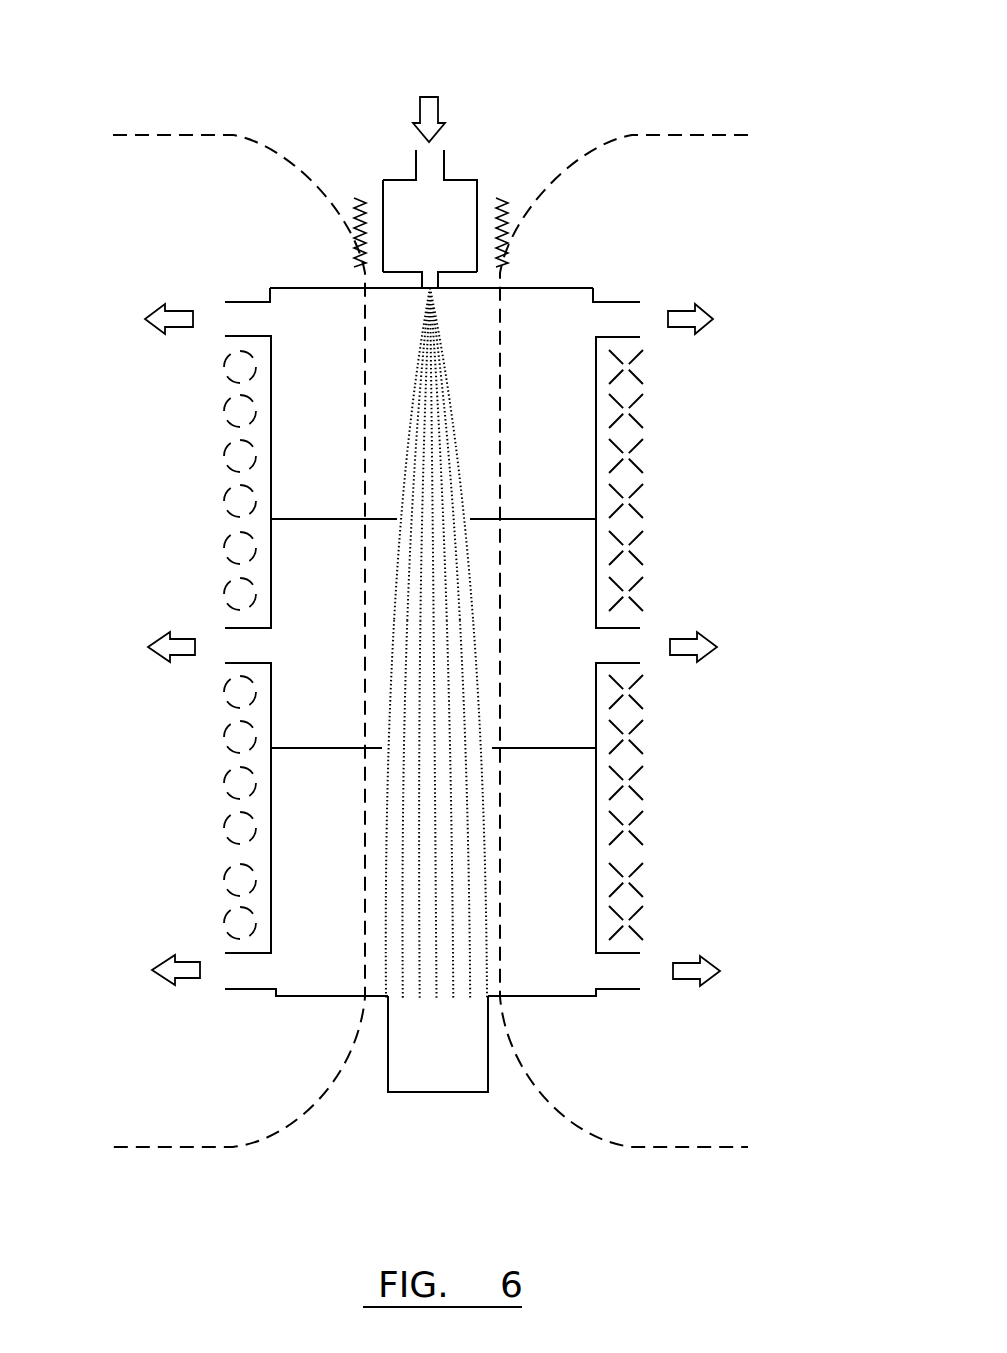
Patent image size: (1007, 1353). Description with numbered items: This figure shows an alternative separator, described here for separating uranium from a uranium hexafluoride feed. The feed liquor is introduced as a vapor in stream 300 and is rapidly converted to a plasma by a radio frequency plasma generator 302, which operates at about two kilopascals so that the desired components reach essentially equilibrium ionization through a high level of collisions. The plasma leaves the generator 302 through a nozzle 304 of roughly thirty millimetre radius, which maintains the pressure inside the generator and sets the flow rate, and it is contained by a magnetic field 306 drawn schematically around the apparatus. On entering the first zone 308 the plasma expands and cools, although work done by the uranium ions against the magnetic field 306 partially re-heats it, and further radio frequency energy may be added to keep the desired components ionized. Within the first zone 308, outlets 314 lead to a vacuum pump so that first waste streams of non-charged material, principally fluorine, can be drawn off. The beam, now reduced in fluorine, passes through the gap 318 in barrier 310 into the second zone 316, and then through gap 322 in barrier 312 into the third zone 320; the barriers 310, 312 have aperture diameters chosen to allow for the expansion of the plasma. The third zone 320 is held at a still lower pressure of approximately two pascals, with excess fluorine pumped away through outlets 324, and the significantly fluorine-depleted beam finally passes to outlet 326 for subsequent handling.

The stream 300 is at (441, 96).
The radio frequency plasma generator 302 is at (497, 170).
The nozzle 304 is at (440, 280).
The magnetic field 306 is at (247, 140).
The zone 1 308 is at (553, 452).
The barrier 310 is at (553, 519).
The barrier 312 is at (550, 748).
The outlets 314 is at (252, 318).
The zone 2 316 is at (553, 573).
The gap 318 is at (432, 547).
The zone 3 320 is at (550, 888).
The gap 322 is at (427, 765).
The outlets 324 is at (255, 973).
The outlet 326 is at (443, 1048).